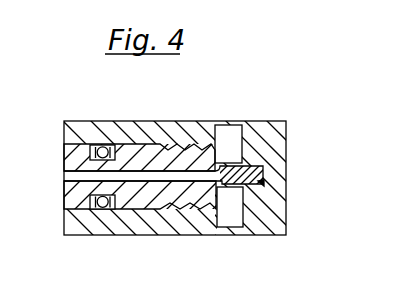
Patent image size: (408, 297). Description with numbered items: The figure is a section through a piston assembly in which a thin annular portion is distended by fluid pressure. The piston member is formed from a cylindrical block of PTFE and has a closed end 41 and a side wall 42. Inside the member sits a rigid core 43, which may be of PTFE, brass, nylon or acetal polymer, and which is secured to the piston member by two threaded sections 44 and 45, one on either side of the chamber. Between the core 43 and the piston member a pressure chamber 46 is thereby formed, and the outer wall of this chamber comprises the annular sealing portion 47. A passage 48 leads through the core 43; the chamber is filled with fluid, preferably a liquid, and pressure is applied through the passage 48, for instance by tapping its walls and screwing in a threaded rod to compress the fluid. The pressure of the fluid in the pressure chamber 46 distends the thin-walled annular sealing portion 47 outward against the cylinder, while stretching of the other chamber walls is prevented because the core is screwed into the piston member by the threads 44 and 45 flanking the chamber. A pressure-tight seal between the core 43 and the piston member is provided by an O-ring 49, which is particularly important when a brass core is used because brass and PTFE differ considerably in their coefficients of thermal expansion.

The closed end 41 is at (269, 141).
The side wall 42 is at (178, 133).
The rigid core 43 is at (88, 146).
The threaded section 44 is at (177, 211).
The threaded section 45 is at (263, 183).
The pressure chamber 46 is at (220, 125).
The annular sealing portion 47 is at (226, 228).
The passage 48 is at (162, 172).
The O-ring 49 is at (92, 213).